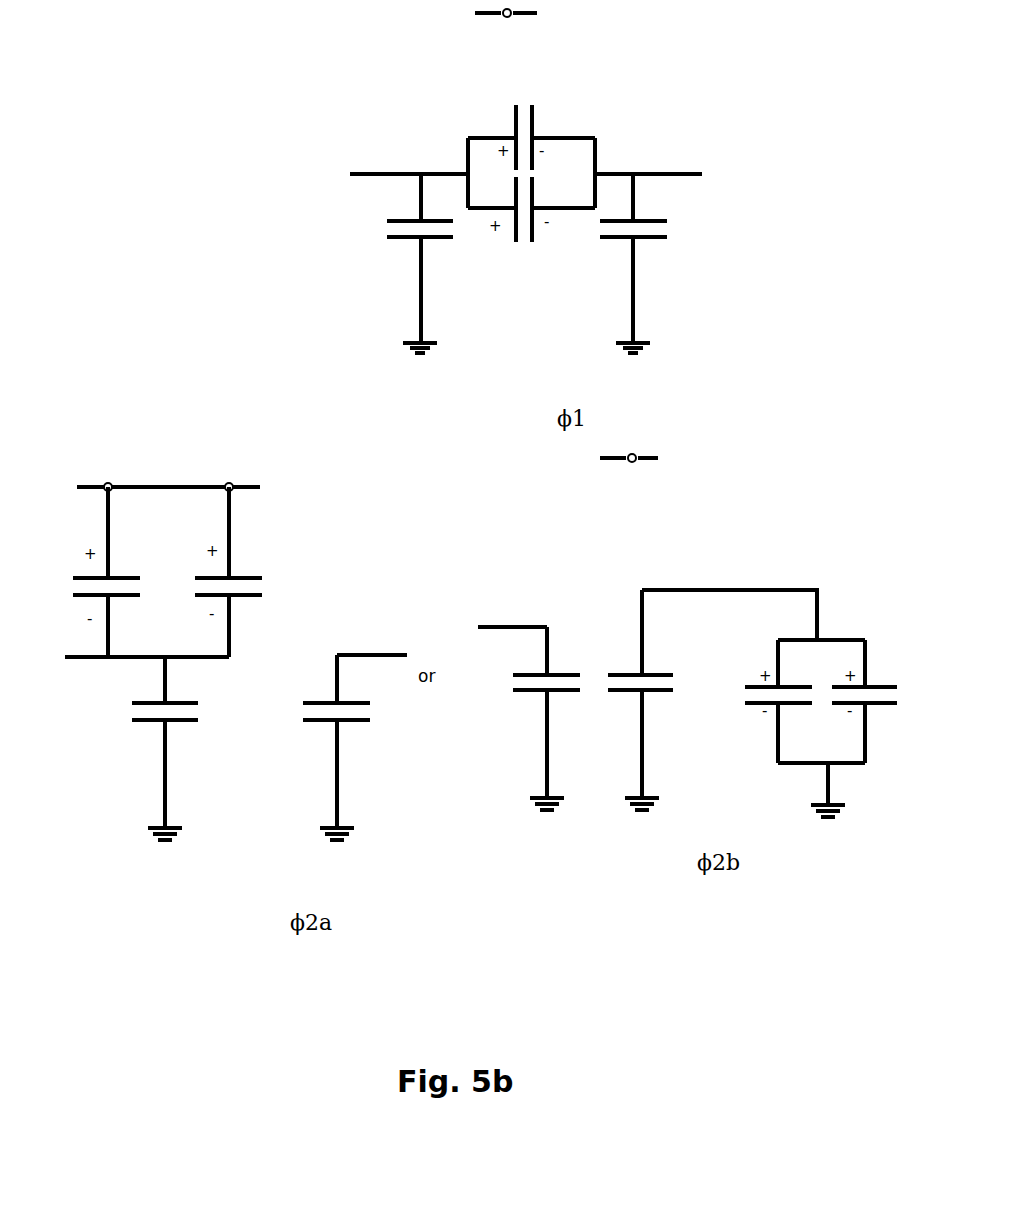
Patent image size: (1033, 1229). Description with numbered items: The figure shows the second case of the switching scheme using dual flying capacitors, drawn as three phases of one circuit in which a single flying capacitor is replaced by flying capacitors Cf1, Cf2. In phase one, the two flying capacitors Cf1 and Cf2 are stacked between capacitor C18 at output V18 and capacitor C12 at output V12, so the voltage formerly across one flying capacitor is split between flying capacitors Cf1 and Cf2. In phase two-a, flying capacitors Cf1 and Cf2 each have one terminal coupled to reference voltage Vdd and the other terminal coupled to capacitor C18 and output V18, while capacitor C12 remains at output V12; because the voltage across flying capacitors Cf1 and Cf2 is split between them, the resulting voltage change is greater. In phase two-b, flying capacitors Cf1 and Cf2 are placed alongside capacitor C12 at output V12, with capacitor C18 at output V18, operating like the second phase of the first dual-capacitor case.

The reference voltage Vdd is at (393, 250).
The output V18 is at (286, 416).
The second output voltage node (1.2 V) V12 is at (577, 399).
The capacitor C18 is at (332, 507).
The output capacitor for V12 C12 is at (508, 507).
The flying capacitor Cf1 is at (468, 419).
The flying capacitor Cf2 is at (520, 495).